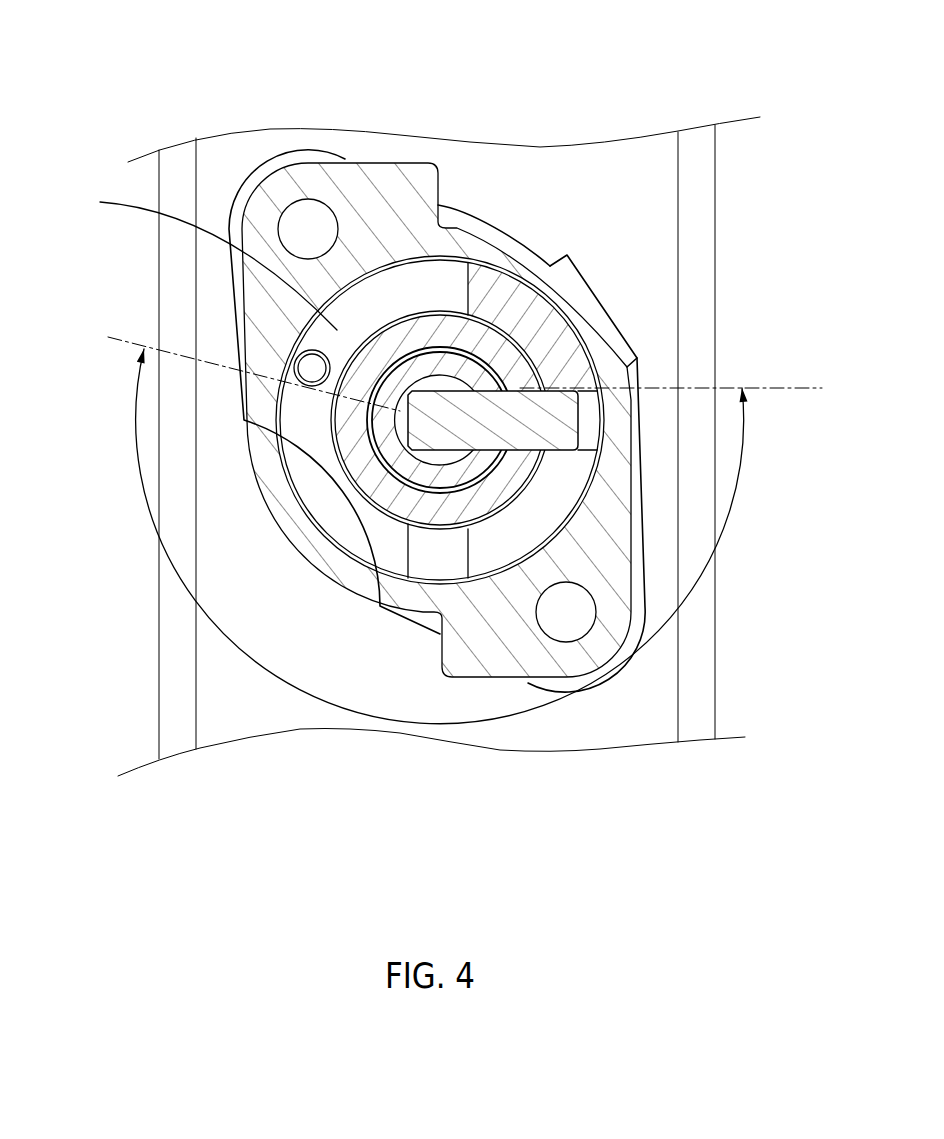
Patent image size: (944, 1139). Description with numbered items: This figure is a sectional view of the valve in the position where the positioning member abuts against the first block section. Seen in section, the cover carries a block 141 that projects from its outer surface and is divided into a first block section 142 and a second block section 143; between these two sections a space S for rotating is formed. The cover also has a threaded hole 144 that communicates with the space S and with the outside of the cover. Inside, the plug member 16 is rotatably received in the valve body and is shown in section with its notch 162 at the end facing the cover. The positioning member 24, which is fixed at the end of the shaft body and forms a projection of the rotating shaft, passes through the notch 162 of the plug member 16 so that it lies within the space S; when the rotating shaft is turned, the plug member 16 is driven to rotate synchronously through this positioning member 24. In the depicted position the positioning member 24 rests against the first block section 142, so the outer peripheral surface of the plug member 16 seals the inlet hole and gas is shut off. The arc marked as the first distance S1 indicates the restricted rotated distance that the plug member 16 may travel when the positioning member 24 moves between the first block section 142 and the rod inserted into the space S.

The plug member 16 is at (403, 338).
The positioning member 24 is at (560, 360).
The block 141 is at (533, 313).
The first block section 142 is at (550, 405).
The second block section 143 is at (468, 297).
The threaded hole 144 is at (292, 355).
The notch 162 is at (560, 295).
The space S is at (208, 255).
The first distance S1 is at (442, 536).